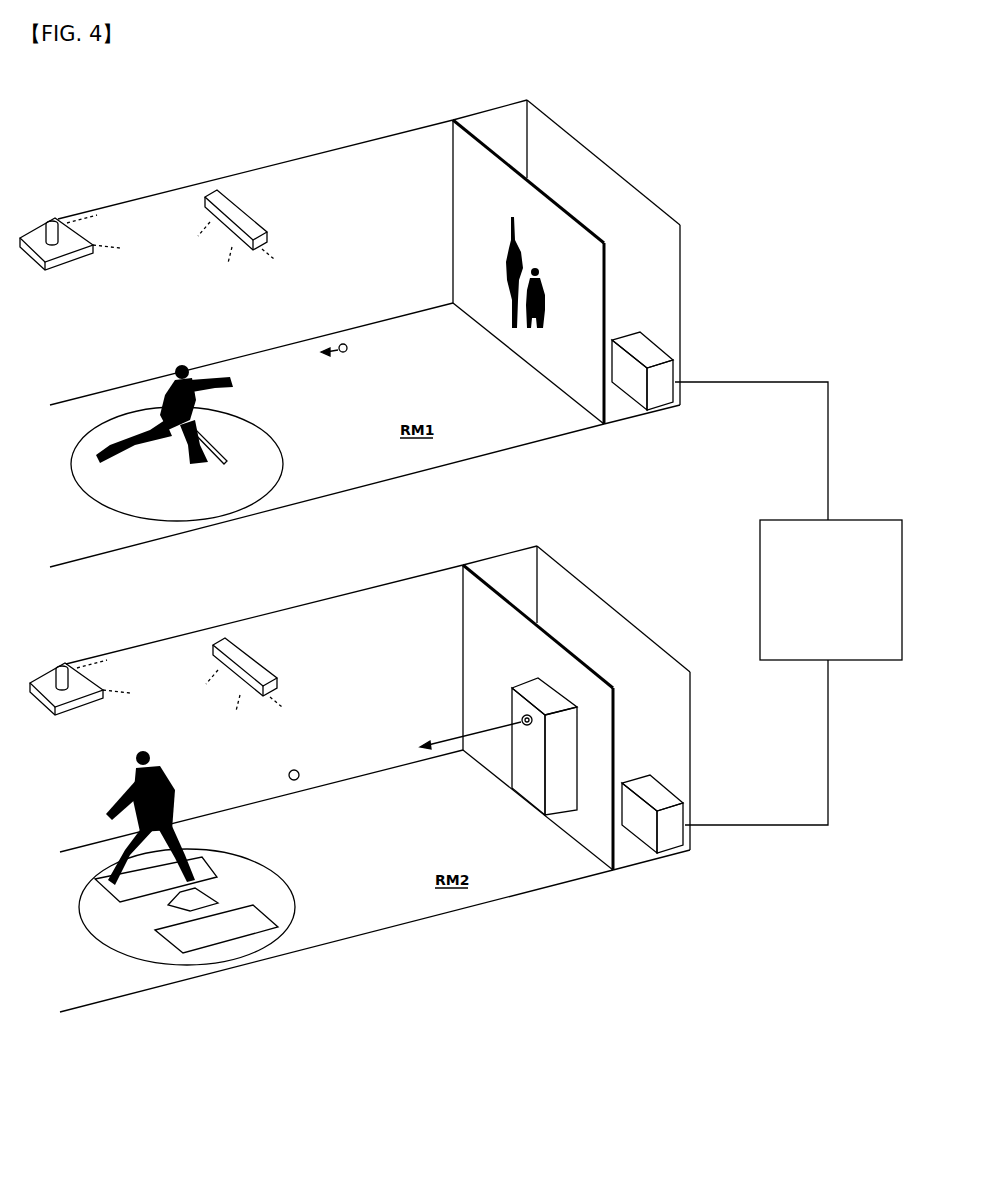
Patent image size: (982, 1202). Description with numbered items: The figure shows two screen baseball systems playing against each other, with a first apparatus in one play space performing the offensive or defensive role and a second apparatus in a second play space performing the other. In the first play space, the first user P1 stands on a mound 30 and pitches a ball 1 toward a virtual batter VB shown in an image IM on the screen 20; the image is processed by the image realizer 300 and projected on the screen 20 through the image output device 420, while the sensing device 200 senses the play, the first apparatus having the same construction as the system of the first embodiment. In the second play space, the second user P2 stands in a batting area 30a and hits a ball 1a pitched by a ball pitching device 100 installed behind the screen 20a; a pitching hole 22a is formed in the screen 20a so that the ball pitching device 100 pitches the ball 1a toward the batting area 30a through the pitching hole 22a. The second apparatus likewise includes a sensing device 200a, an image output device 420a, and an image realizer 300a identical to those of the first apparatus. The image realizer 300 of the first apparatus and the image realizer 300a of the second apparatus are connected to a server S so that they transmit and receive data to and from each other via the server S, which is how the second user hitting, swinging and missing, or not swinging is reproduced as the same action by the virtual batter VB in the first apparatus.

The screen 20 is at (503, 160).
The screen 20a is at (513, 606).
The image IM is at (471, 216).
The virtual batter VB is at (502, 252).
The image output device 420 is at (65, 263).
The image output device 420a is at (75, 708).
The sensing device 200 is at (245, 205).
The sensing device 200a is at (255, 651).
The first user P1 is at (174, 392).
The second user P2 is at (160, 762).
The ball 1 is at (348, 348).
The ball 1a is at (292, 769).
The mound 30 is at (287, 444).
The batting area 30a is at (294, 890).
The image realizer 300 is at (657, 396).
The image realizer 300a is at (667, 839).
The ball pitching device 100 is at (498, 746).
The pitching hole 22a is at (521, 715).
The server S is at (831, 590).